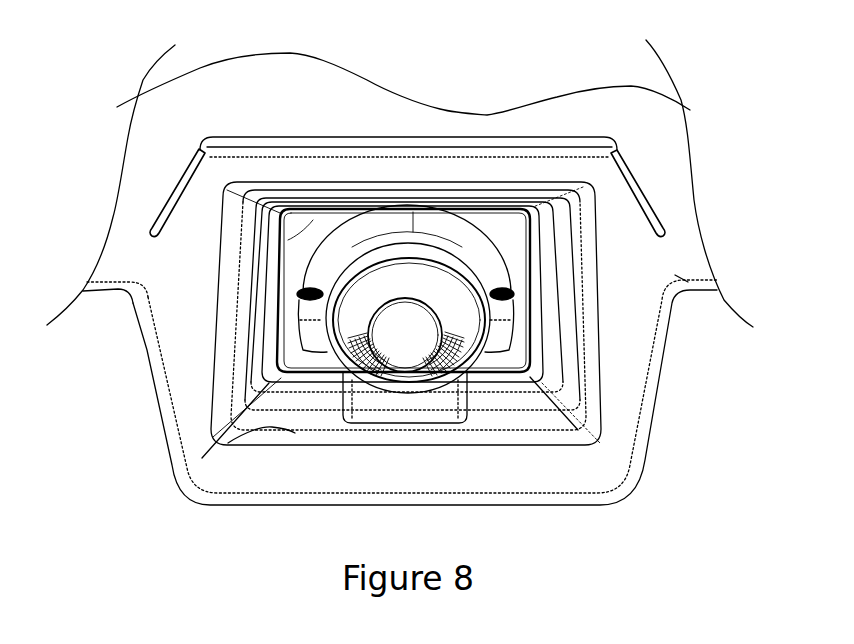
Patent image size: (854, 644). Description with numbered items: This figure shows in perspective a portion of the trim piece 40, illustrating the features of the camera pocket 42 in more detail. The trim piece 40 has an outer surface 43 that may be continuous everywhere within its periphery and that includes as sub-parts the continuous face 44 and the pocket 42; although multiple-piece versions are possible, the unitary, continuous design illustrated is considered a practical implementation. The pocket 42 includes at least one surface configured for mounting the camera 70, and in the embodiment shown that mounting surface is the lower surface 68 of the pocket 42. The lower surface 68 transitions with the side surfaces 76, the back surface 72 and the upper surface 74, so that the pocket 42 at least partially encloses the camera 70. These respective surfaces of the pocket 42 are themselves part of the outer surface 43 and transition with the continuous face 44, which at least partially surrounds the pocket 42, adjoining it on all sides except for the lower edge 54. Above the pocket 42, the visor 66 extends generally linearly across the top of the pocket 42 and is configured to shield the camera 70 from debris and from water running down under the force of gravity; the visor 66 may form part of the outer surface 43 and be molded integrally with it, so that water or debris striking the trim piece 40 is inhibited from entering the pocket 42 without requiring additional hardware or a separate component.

The trim piece 40 is at (692, 287).
The pocket 42 is at (580, 507).
The outer surface 43 is at (611, 100).
The continuous face 44 is at (672, 158).
The lower edge 54 is at (125, 305).
The visor 66 is at (395, 137).
The lower surface 68 is at (202, 458).
The camera 70 is at (437, 418).
The back surface 72 is at (290, 240).
The upper surface 74 is at (328, 187).
The side surfaces 76 is at (238, 336).